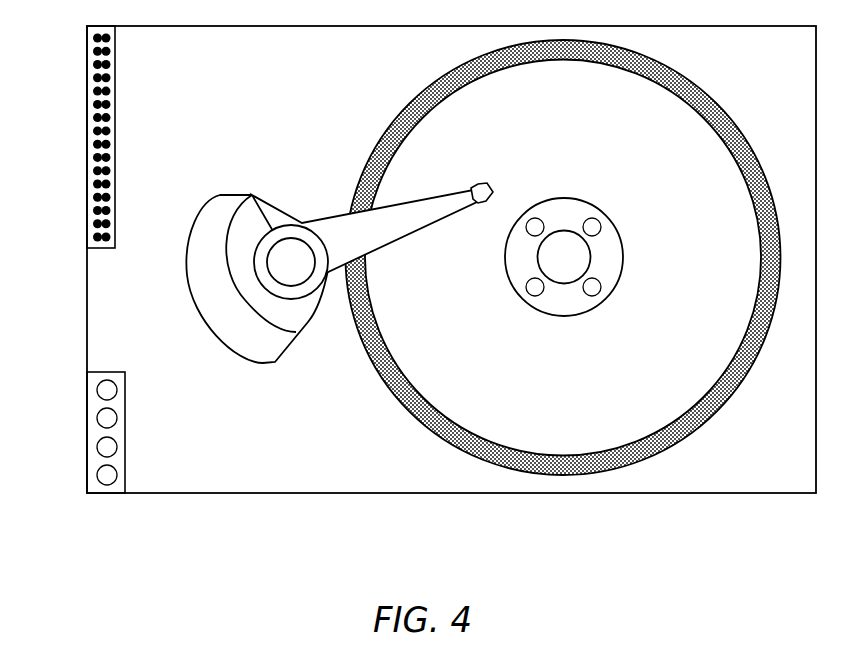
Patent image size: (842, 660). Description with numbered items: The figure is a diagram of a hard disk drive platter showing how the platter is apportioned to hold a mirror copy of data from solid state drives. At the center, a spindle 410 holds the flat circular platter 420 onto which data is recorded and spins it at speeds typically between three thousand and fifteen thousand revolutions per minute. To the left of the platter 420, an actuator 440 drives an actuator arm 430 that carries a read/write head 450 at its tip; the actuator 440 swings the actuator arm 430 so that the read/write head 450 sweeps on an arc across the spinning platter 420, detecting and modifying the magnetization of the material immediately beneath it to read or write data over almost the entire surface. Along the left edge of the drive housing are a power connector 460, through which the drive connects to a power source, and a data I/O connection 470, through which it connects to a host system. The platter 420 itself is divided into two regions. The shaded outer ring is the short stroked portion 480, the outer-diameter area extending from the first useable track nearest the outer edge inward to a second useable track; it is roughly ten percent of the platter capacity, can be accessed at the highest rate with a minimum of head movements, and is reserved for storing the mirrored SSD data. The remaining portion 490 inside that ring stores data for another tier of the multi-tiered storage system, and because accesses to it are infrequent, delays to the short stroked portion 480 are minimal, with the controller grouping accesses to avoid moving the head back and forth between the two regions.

The spindle 410 is at (610, 233).
The platter 420 is at (433, 80).
The actuator arm 430 is at (337, 218).
The actuator 440 is at (212, 199).
The read/write head 450 is at (477, 183).
The power connector 460 is at (87, 405).
The data I/O connection 470 is at (87, 107).
The short stroked portion 480 is at (402, 117).
The remaining portion 490 is at (581, 391).